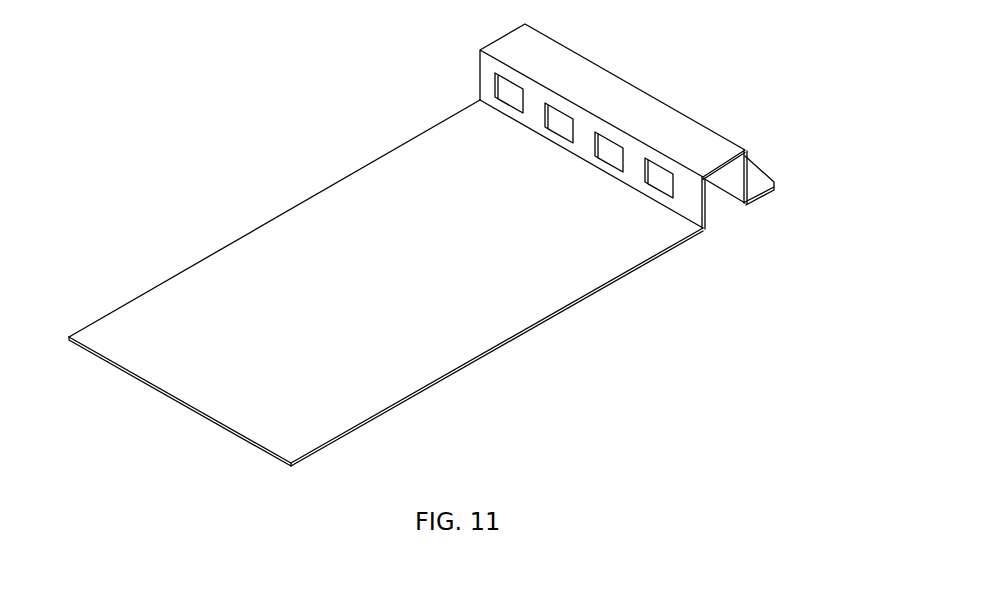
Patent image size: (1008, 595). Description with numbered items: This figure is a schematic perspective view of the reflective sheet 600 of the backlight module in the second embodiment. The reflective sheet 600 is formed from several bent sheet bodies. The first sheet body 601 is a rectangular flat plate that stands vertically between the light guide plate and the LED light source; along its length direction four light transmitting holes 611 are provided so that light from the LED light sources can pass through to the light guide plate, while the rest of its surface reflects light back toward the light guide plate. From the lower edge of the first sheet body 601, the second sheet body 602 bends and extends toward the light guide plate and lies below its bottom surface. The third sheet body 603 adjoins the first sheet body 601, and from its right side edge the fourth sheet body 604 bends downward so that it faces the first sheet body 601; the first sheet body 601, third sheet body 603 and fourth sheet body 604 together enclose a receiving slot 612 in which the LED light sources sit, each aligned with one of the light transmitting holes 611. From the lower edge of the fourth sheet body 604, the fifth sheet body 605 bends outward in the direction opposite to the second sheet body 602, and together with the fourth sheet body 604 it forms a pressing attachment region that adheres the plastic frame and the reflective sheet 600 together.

The reflective sheet 600 is at (315, 130).
The first sheet body 601 is at (690, 210).
The second sheet body 602 is at (602, 272).
The third sheet body 603 is at (510, 45).
The fourth sheet body 604 is at (730, 183).
The fifth sheet body 605 is at (765, 181).
The light transmitting holes 611 is at (506, 96).
The receiving slot 612 is at (722, 207).